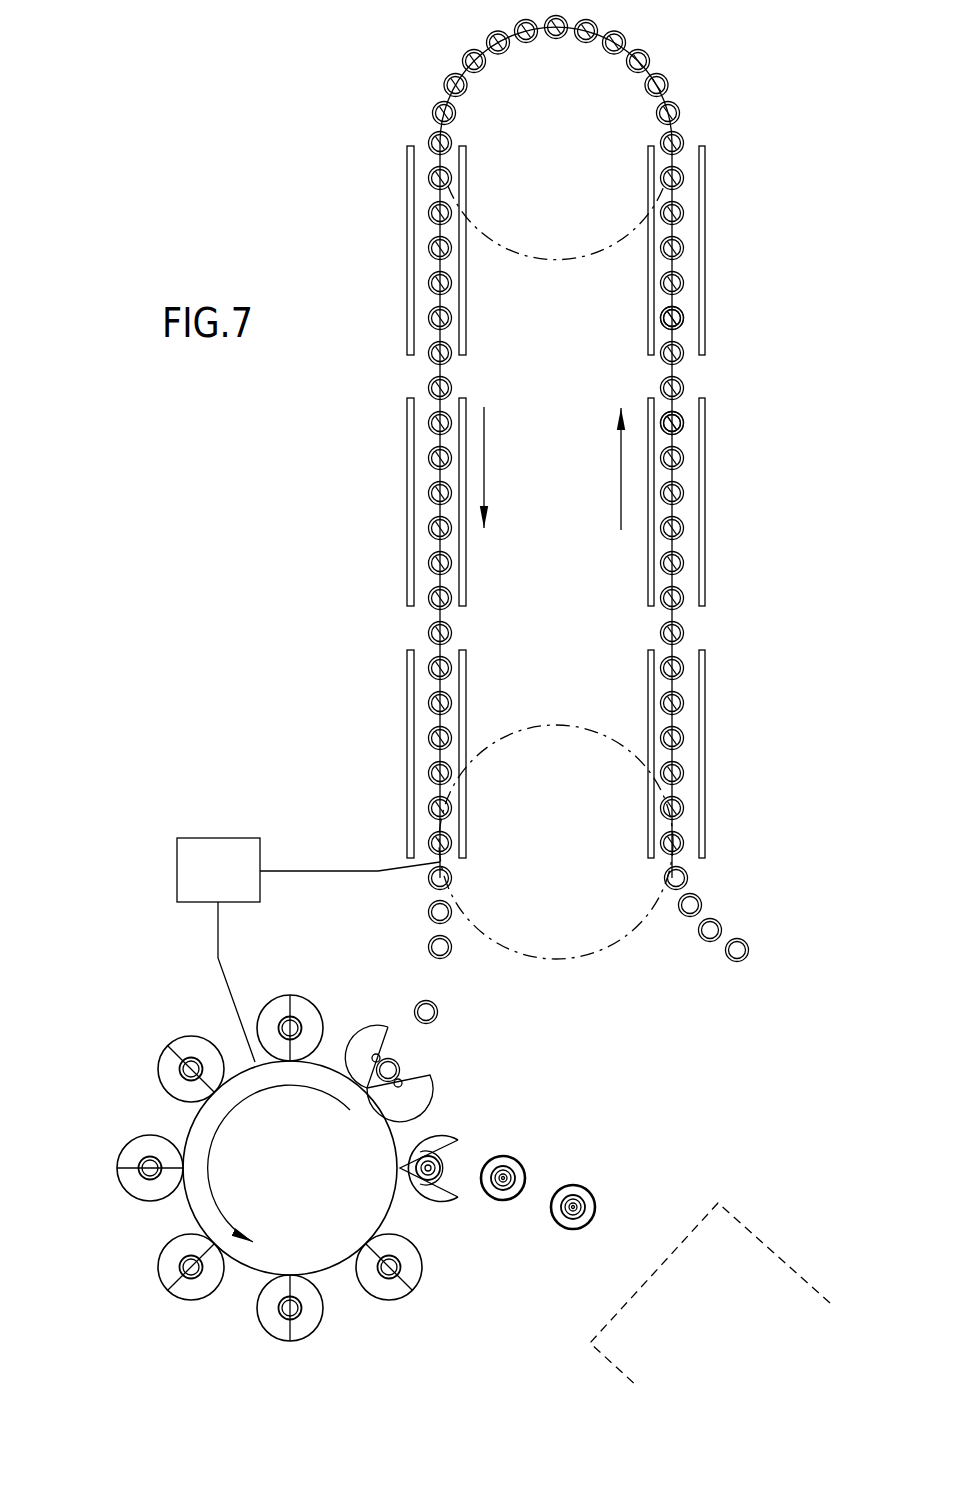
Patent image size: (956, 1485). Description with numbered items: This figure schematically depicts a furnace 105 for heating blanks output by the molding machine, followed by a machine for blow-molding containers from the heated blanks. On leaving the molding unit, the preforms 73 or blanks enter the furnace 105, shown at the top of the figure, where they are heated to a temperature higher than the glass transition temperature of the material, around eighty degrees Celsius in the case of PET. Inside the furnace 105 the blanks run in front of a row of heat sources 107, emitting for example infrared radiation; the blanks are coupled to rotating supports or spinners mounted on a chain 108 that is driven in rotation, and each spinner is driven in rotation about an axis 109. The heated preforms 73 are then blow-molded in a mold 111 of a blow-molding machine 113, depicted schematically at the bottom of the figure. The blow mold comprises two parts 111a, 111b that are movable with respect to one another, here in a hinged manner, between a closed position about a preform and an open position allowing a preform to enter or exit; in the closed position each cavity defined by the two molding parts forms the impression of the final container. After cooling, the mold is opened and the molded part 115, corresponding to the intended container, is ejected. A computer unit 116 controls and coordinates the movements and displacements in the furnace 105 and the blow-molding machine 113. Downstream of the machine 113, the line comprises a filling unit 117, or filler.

The furnace 105 is at (265, 481).
The heat sources 107 is at (411, 270).
The chain 108 is at (440, 612).
The axis 109 is at (672, 317).
The preforms 73 is at (429, 770).
The mold 111 is at (298, 995).
The mold part 111a is at (368, 1030).
The mold part 111b is at (426, 1084).
The blow-molding machine 113 is at (221, 1012).
The molded part 115 is at (583, 1185).
The computer unit 116 is at (308, 950).
The filling unit 117 is at (733, 1228).